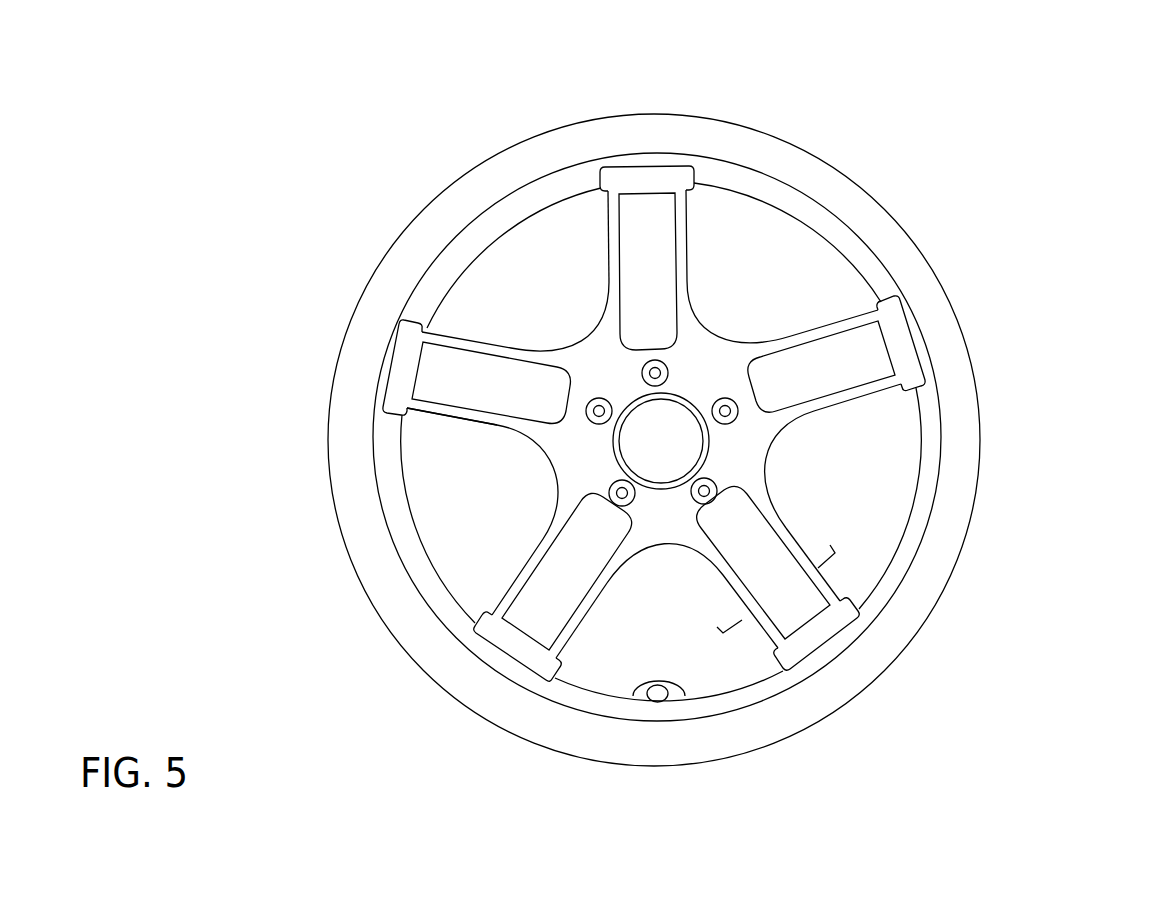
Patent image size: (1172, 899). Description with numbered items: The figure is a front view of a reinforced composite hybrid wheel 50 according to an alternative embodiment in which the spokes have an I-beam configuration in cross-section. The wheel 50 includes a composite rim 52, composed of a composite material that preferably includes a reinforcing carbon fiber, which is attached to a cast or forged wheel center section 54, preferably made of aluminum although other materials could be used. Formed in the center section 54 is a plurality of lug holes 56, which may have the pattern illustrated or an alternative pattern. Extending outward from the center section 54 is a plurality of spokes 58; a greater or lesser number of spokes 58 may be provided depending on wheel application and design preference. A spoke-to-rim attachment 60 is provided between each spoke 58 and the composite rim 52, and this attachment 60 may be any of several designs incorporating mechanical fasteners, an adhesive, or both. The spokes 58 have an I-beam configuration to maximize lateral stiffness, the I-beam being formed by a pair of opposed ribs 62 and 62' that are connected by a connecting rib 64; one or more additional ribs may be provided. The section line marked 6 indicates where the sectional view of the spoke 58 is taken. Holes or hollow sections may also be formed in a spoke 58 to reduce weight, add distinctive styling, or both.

The reinforced composite hybrid wheel 50 is at (1060, 200).
The composite rim 52 is at (915, 528).
The wheel center section 54 is at (738, 452).
The lug holes 56 is at (600, 400).
The spokes 58 is at (470, 422).
The spoke-to-rim attachment 60 is at (402, 371).
The rib 62 is at (642, 419).
The rib 62' is at (615, 380).
The connecting rib 64 is at (648, 222).
The section line 6- 6 is at (766, 572).